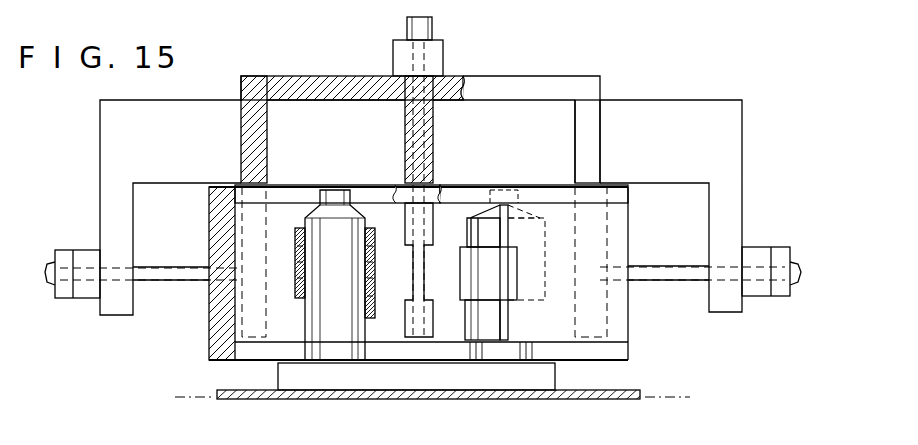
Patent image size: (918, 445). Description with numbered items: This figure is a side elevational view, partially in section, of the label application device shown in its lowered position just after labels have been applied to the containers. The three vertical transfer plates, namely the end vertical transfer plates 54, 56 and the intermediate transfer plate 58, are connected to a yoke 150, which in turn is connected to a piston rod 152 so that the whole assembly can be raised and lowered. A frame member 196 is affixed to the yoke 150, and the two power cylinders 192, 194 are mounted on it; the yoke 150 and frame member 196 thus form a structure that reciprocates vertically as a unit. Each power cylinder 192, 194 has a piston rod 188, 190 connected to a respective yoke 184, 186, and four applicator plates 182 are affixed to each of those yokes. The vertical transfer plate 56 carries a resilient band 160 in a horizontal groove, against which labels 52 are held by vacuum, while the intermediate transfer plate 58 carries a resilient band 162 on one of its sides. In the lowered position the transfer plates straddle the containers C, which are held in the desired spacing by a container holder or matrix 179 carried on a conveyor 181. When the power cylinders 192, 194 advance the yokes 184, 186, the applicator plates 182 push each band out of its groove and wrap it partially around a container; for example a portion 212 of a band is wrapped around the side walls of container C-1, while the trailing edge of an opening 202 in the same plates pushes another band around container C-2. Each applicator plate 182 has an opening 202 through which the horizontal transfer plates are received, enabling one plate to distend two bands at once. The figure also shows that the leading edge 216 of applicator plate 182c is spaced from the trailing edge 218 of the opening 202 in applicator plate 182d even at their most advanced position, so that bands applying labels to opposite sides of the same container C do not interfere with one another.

The yoke 150 is at (361, 76).
The piston rod 152 is at (426, 33).
The vertical transfer plate 56 is at (250, 147).
The vertical transfer plate 54 is at (598, 153).
The intermediate transfer plate 58 is at (413, 141).
The frame member 196 is at (742, 148).
The power cylinder 194 is at (66, 250).
The power cylinder 192 is at (783, 250).
The piston rod 190 is at (169, 284).
The piston rod 188 is at (676, 284).
The yoke 186 is at (214, 350).
The yoke 184 is at (616, 238).
The applicator plate 182 is at (248, 363).
The applicator plate 182c is at (357, 190).
The applicator plate 182d is at (547, 190).
The opening 202 is at (461, 190).
The container C is at (366, 331).
The resilient band 160 is at (293, 258).
The portion of band 212 is at (375, 258).
The label 52 is at (300, 312).
The leading edge 216 is at (508, 242).
The resilient band 162 is at (480, 284).
The trailing edge 218 is at (482, 316).
The container holder or matrix 179 is at (556, 373).
The conveyor 181 is at (612, 395).
The container C-1 is at (339, 358).
The container C-2 is at (472, 328).